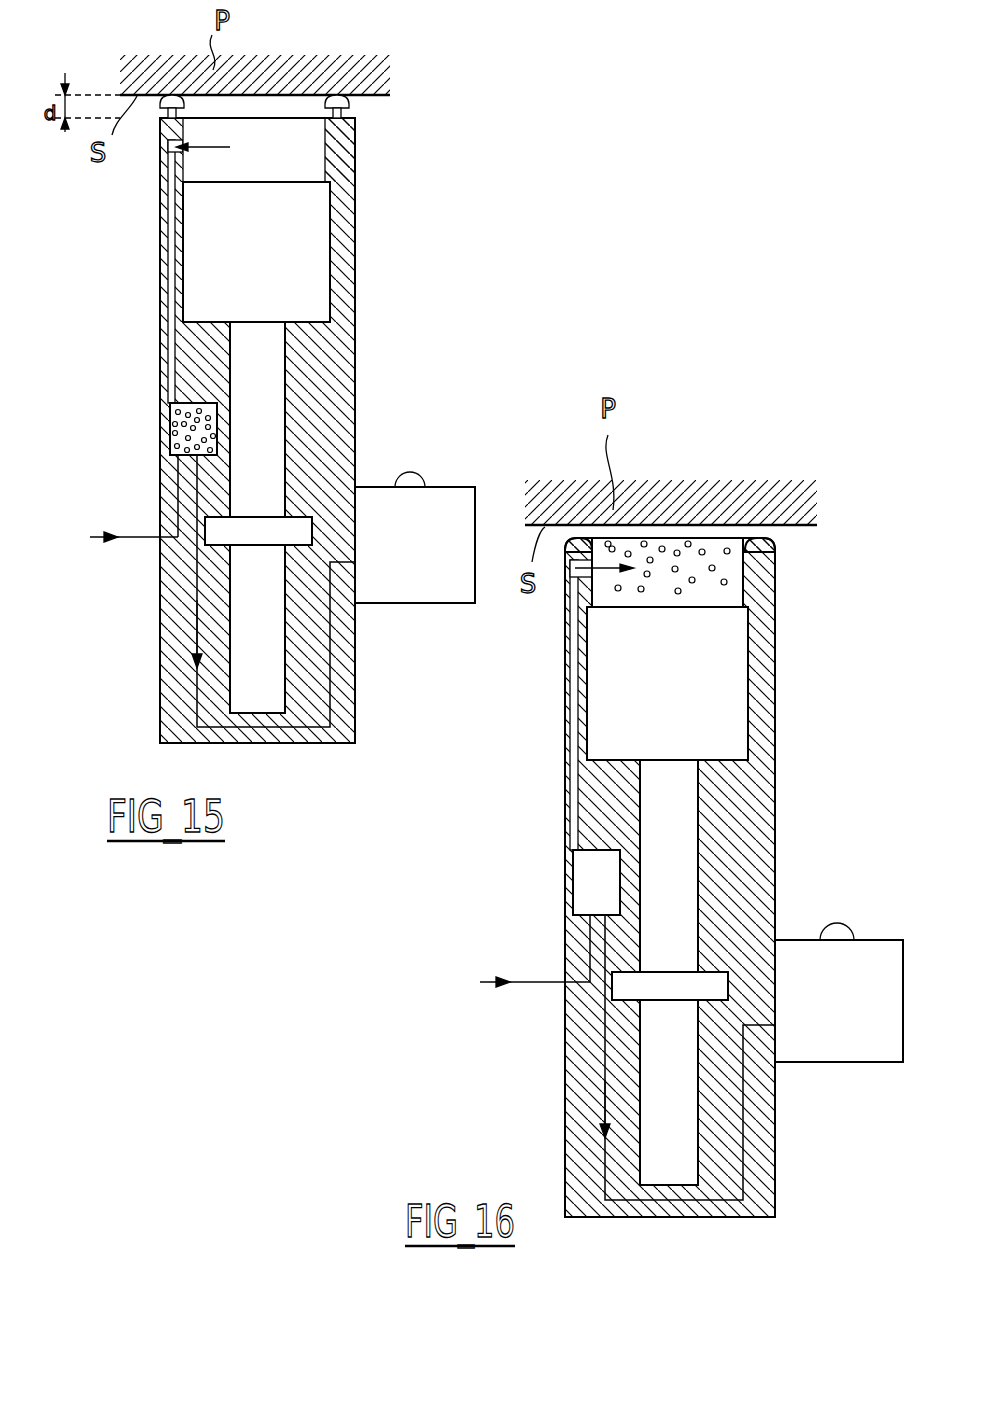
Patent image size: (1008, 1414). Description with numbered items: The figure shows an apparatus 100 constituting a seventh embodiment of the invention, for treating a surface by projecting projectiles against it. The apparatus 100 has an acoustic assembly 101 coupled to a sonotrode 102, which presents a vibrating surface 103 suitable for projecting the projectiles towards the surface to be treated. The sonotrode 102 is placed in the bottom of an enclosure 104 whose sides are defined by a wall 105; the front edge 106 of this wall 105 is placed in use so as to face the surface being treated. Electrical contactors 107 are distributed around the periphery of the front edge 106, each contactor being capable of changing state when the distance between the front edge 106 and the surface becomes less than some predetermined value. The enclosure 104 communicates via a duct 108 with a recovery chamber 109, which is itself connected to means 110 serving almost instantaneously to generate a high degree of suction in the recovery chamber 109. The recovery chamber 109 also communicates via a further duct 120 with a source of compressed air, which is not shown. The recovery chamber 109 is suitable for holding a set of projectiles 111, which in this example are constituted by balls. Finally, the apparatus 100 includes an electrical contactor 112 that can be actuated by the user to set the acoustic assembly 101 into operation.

In FIG. 15, the apparatus 100 is at (438, 188).
In FIG. 16, the apparatus 100 is at (798, 445).
In FIG. 15, the acoustic assembly 101 is at (265, 437).
In FIG. 16, the acoustic assembly 101 is at (680, 868).
In FIG. 15, the sonotrode 102 is at (300, 270).
In FIG. 16, the sonotrode 102 is at (708, 692).
In FIG. 15, the vibrating surface 103 is at (330, 175).
In FIG. 15, the enclosure 104 is at (315, 135).
In FIG. 16, the enclosure 104 is at (712, 585).
In FIG. 15, the wall 105 is at (352, 143).
In FIG. 15, the front edge 106 is at (160, 118).
In FIG. 16, the front edge 106 is at (768, 555).
In FIG. 15, the electrical contactors 107 is at (168, 95).
In FIG. 16, the electrical contactors 107 is at (575, 525).
In FIG. 15, the duct 108 is at (170, 335).
In FIG. 16, the duct 108 is at (577, 687).
In FIG. 15, the recovery chamber 109 is at (170, 458).
In FIG. 16, the recovery chamber 109 is at (585, 867).
In FIG. 15, the suction generating means 110 is at (405, 603).
In FIG. 16, the suction generating means 110 is at (833, 1062).
In FIG. 15, the projectiles 111 is at (180, 412).
In FIG. 15, the electrical contactor 112 is at (408, 472).
In FIG. 16, the electrical contactor 112 is at (838, 927).
In FIG. 15, the duct 120 is at (125, 540).
In FIG. 16, the duct 120 is at (483, 985).